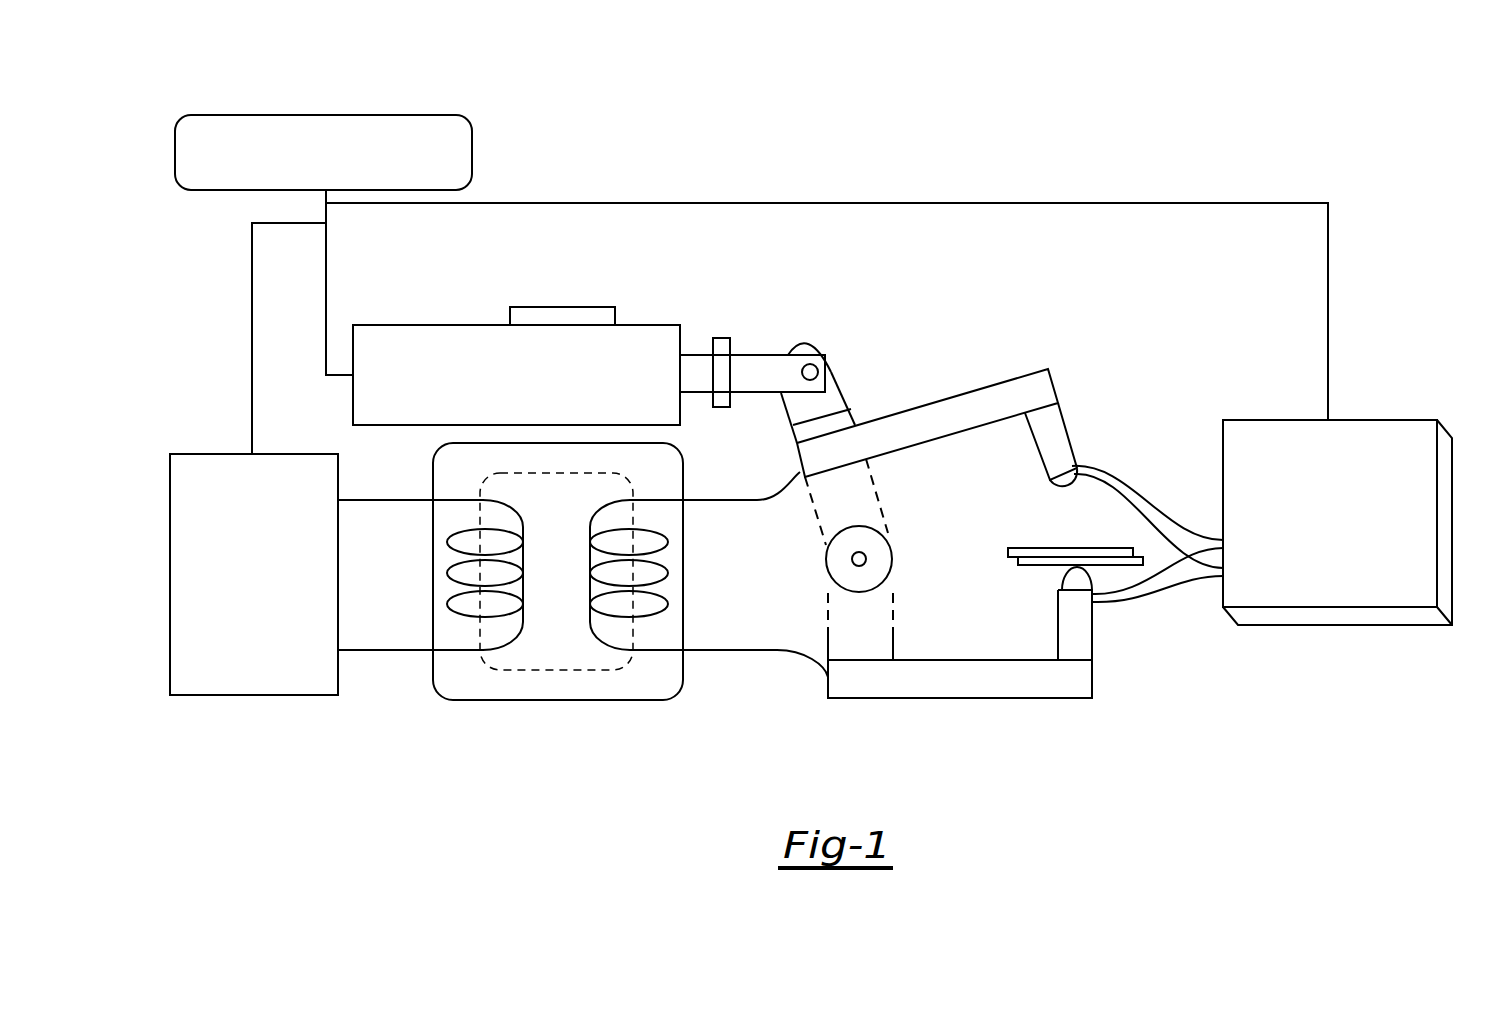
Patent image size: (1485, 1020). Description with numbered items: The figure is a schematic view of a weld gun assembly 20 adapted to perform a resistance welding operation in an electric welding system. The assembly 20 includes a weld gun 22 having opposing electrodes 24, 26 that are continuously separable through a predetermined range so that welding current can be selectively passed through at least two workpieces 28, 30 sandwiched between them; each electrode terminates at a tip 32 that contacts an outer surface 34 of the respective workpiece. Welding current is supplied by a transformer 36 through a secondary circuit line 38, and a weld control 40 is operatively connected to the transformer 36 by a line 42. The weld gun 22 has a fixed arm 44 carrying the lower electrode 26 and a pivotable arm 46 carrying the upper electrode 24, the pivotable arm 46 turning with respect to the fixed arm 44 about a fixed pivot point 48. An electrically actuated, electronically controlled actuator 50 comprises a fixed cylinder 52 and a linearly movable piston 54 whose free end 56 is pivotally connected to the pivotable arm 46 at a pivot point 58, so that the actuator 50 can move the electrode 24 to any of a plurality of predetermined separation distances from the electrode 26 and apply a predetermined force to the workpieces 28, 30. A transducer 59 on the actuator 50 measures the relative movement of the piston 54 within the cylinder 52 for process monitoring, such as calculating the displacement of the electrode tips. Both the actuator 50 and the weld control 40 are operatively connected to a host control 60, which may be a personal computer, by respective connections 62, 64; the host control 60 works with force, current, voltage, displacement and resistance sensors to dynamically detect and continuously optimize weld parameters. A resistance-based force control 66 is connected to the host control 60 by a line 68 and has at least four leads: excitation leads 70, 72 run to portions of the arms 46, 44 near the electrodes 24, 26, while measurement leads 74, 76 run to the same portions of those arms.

The assembly 20 is at (792, 146).
The weld gun 22 is at (1020, 353).
The electrode 24 is at (1062, 432).
The electrode 26 is at (1092, 648).
The workpiece 28 is at (1008, 552).
The workpiece 30 is at (1018, 560).
The tip 32 is at (1055, 487).
The outer surface 34 is at (1065, 555).
The transformer 36 is at (500, 700).
The secondary circuit line 38 is at (722, 652).
The weld control 40 is at (265, 695).
The line 42 is at (385, 652).
The fixed arm 44 is at (862, 698).
The pivotable arm 46 is at (932, 403).
The fixed pivot point 48 is at (852, 559).
The actuator 50 is at (516, 334).
The fixed cylinder 52 is at (412, 325).
The piston 54 is at (745, 355).
The free end 56 is at (806, 348).
The pivot point 58 is at (818, 372).
The transducer 59 is at (588, 307).
The host control 60 is at (435, 115).
The communication line 62 is at (326, 262).
The communication line 64 is at (252, 290).
The resistance-based force control 66 is at (1420, 420).
The line 68 is at (935, 203).
The excitation lead 70 is at (1182, 523).
The excitation lead 72 is at (1160, 560).
The measurement lead 74 is at (1124, 494).
The measurement lead 76 is at (1197, 590).